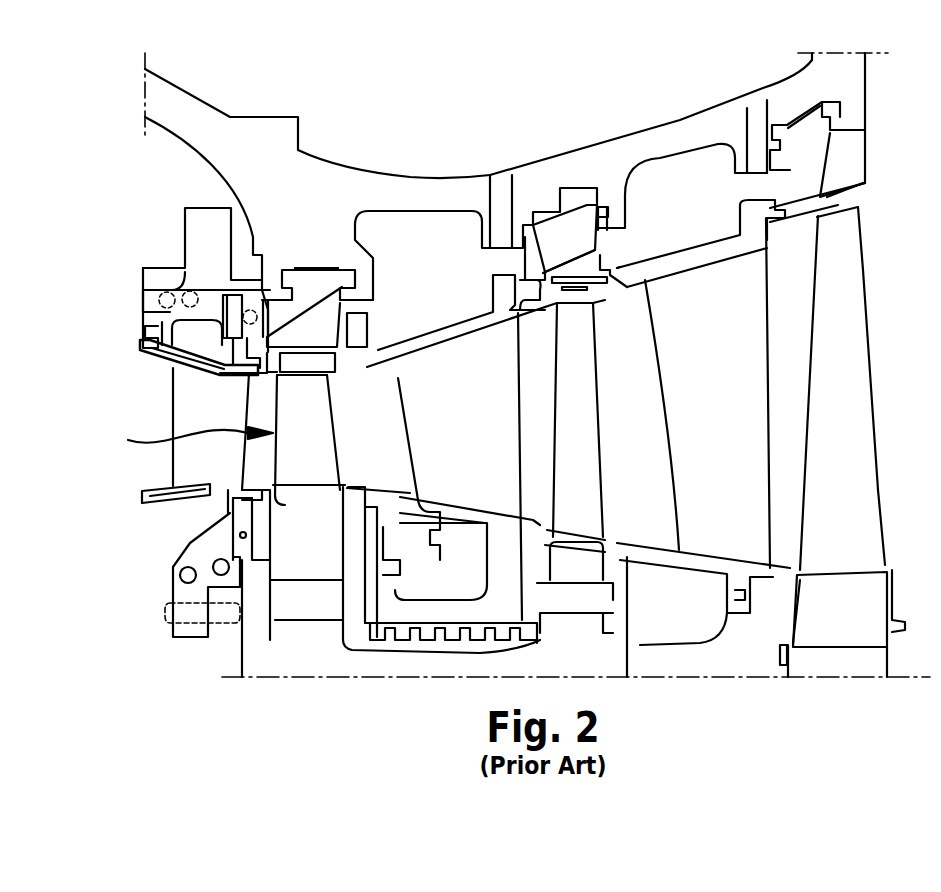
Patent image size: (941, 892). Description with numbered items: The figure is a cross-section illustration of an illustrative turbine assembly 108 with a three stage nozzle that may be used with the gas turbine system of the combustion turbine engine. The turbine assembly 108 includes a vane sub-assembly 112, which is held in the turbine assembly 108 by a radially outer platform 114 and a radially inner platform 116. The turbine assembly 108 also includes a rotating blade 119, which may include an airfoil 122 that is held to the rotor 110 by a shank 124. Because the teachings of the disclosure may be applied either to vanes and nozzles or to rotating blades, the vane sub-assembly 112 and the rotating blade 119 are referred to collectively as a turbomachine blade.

The turbine assembly 108 is at (437, 168).
The rotor 110 is at (308, 660).
The vane sub-assembly 112 is at (440, 420).
The radially outer platform 114 is at (444, 346).
The radially inner platform 116 is at (505, 515).
The rotating blade 119 is at (176, 438).
The airfoil 122 is at (295, 413).
The shank 124 is at (308, 537).